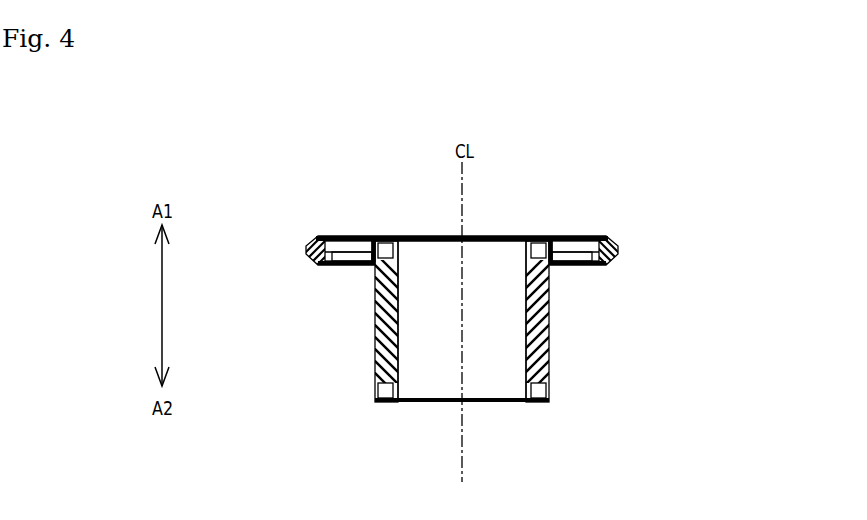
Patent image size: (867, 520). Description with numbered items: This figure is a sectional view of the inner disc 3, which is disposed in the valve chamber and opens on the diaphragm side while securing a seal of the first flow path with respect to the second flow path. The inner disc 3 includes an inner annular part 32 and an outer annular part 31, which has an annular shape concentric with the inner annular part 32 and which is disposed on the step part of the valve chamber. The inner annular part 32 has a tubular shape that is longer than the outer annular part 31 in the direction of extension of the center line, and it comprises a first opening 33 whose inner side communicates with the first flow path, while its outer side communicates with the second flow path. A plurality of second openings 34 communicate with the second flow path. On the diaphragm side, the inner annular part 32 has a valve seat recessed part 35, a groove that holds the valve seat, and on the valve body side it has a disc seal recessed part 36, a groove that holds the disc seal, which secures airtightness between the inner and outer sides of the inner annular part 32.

The inner disc 3 is at (623, 181).
The outer annular part 31 is at (612, 262).
The inner annular part 32 is at (550, 350).
The first opening 33 is at (490, 275).
The second openings 34 is at (359, 257).
The valve seat recessed part 35 is at (388, 256).
The disc seal recessed part 36 is at (386, 398).